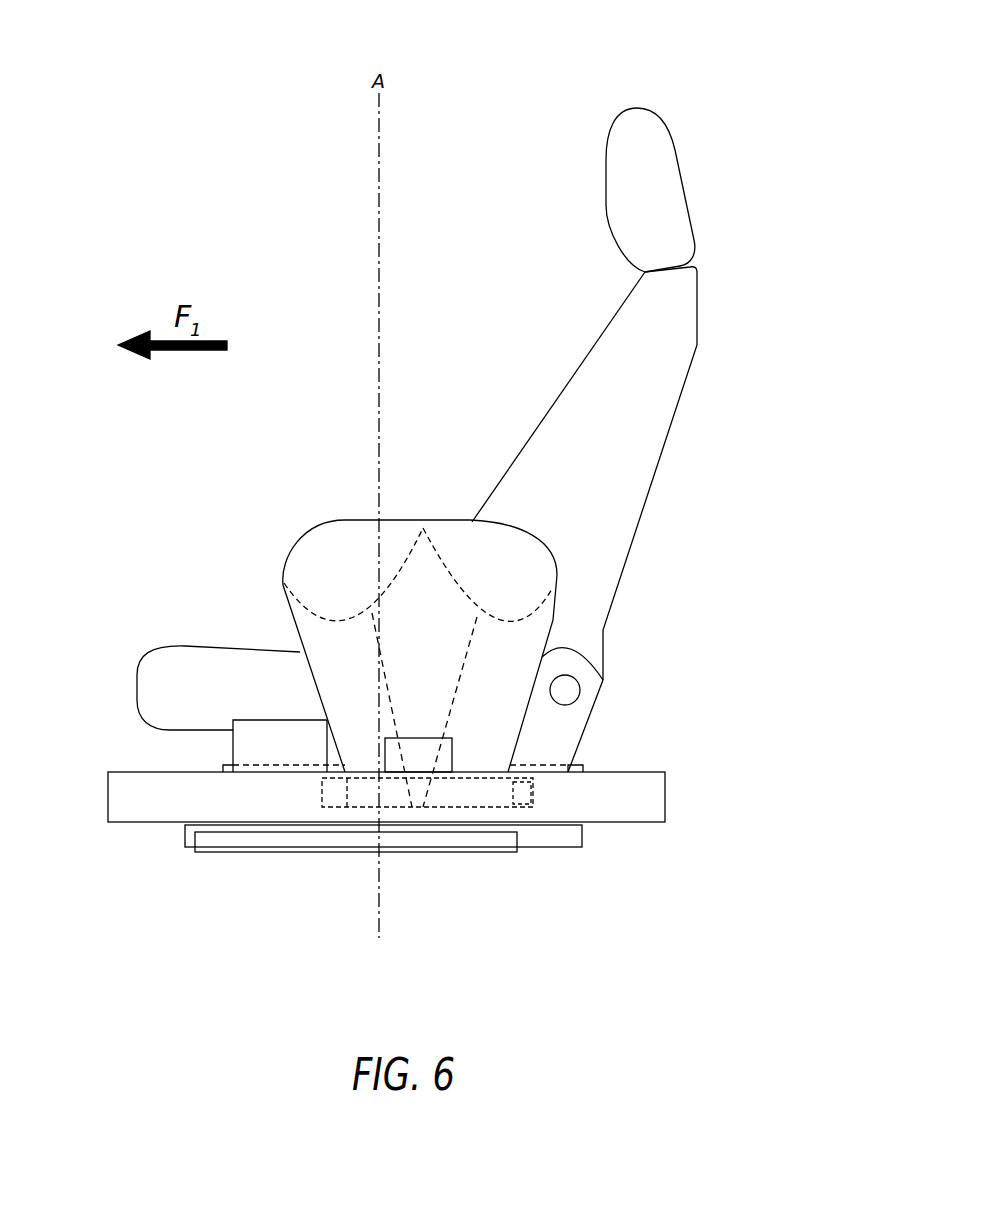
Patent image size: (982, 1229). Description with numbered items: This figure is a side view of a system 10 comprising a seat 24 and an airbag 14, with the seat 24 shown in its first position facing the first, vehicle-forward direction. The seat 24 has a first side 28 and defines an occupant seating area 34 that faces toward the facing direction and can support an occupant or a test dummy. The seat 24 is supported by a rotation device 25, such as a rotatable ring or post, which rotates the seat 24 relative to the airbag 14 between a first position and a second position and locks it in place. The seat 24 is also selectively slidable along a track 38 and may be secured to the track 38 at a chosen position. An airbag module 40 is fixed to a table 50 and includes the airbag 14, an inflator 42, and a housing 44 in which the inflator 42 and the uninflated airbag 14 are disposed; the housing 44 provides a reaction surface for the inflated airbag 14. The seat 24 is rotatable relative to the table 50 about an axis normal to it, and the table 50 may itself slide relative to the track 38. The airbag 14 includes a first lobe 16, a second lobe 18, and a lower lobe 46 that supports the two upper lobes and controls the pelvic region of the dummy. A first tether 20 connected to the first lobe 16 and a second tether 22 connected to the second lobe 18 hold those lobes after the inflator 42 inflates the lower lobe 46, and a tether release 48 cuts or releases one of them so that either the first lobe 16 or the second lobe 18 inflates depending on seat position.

The system 10 is at (727, 88).
The airbag 14 is at (550, 630).
The first lobe 16 is at (452, 528).
The second lobe 18 is at (318, 545).
The first tether 20 is at (462, 668).
The second tether 22 is at (387, 677).
The seat 24 is at (698, 322).
The rotation device 25 is at (583, 768).
The first side 28 is at (608, 448).
The occupant seating area 34 is at (506, 318).
The track 38 is at (217, 842).
The airbag module 40 is at (315, 801).
The inflator 42 is at (523, 823).
The housing 44 is at (333, 810).
The lower lobe 46 is at (492, 748).
The tether release 48 is at (383, 762).
The table 50 is at (120, 798).